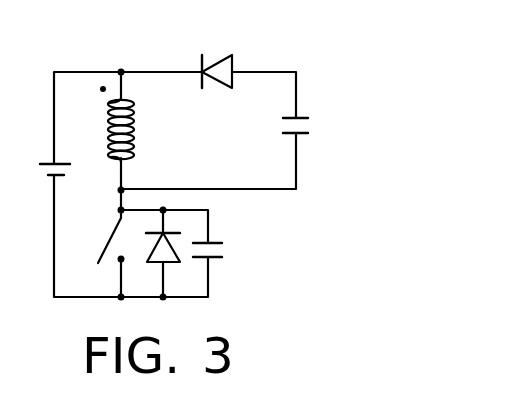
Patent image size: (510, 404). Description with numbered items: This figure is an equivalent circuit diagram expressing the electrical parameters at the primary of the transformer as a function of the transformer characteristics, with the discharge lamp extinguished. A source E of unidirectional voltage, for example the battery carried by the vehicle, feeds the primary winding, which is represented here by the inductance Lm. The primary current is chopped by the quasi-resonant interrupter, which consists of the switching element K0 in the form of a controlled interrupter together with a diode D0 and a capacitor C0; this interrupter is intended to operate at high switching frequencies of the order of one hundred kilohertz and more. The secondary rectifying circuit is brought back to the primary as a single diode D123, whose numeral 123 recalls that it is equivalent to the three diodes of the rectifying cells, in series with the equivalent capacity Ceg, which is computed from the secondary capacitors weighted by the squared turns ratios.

The source of unidirectional voltage E is at (43, 169).
The magnetizing inductance Lm is at (99, 124).
The switching element K0 is at (96, 237).
The diode D0 is at (153, 265).
The capacitor C0 is at (226, 259).
The equivalent diode D123 is at (262, 57).
The equivalent diode 123 is at (262, 57).
The equivalent capacity Ceg is at (321, 131).